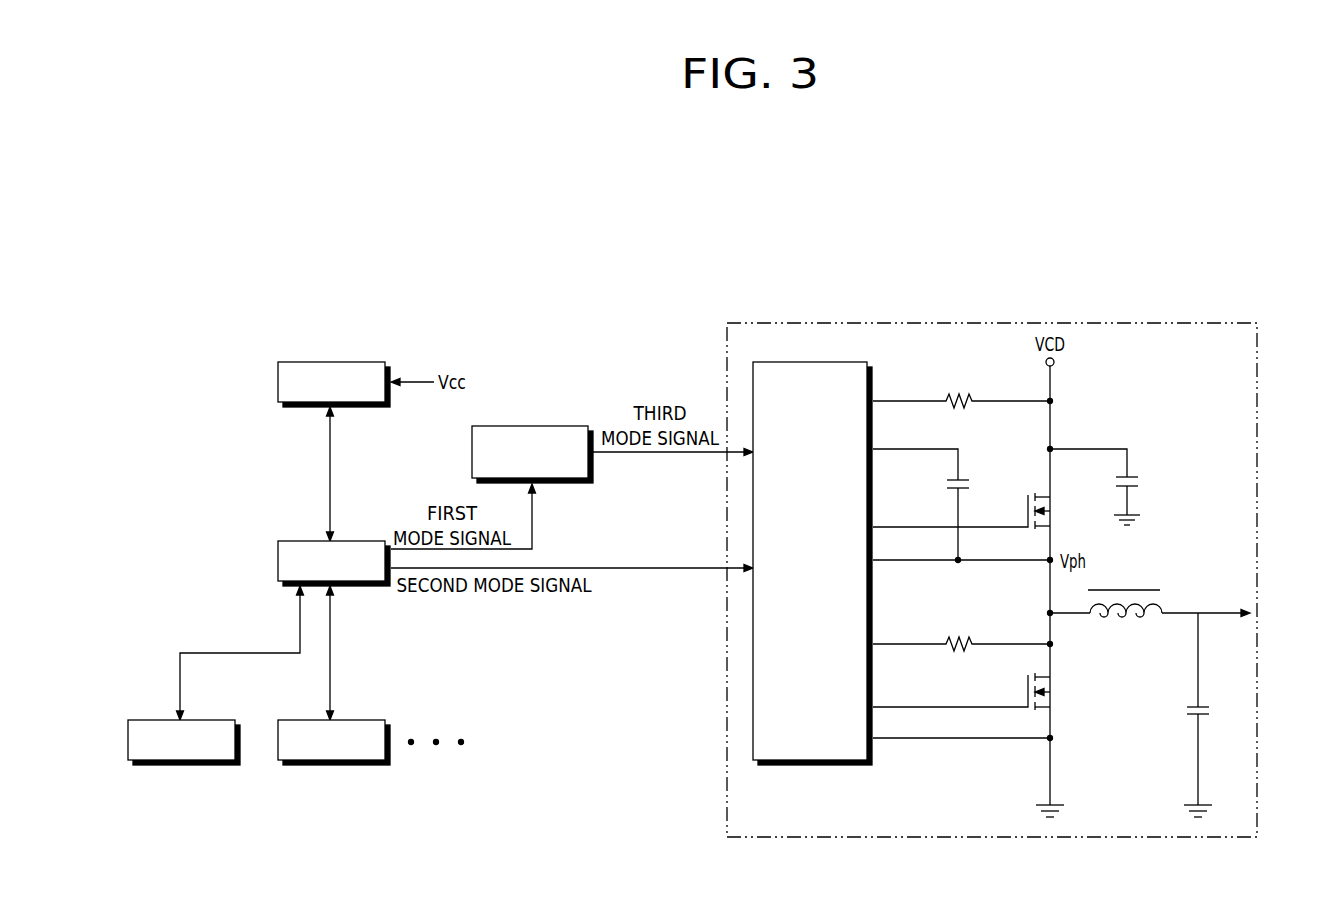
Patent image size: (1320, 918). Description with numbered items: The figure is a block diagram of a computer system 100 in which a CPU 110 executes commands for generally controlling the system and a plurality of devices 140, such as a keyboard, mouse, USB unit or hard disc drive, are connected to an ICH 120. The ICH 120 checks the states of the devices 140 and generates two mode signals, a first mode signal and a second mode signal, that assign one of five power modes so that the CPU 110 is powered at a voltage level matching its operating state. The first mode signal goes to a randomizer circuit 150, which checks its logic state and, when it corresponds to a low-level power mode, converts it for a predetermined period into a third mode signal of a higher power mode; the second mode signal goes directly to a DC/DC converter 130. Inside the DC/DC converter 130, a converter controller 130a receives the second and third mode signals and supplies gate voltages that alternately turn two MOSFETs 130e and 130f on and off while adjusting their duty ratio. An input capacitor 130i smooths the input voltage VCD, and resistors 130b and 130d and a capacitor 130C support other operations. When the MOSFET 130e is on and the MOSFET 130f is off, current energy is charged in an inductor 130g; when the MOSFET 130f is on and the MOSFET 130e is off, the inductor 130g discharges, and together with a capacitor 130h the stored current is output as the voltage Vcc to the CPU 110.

The computer system 100 is at (948, 222).
The CPU 110 is at (278, 384).
The ICH 120 is at (278, 562).
The DC/DC converter 130 is at (727, 337).
The converter controller 130a is at (805, 362).
The resistor 130b is at (962, 397).
The capacitor 130C is at (962, 479).
The resistor 130d is at (962, 640).
The MOSFET 130e is at (1043, 505).
The MOSFET 130f is at (1043, 690).
The inductor 130g is at (1143, 589).
The capacitor 130h is at (1203, 706).
The input capacitor 130i is at (1133, 479).
The devices 140 is at (287, 765).
The randomizer circuit 150 is at (528, 426).